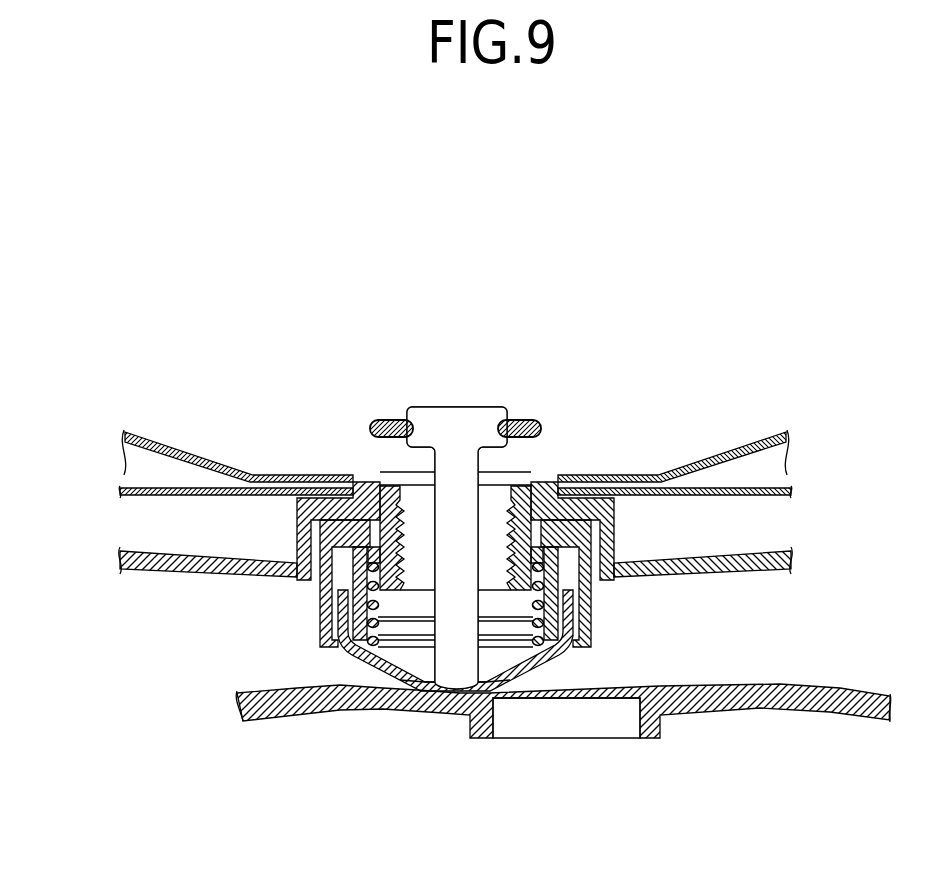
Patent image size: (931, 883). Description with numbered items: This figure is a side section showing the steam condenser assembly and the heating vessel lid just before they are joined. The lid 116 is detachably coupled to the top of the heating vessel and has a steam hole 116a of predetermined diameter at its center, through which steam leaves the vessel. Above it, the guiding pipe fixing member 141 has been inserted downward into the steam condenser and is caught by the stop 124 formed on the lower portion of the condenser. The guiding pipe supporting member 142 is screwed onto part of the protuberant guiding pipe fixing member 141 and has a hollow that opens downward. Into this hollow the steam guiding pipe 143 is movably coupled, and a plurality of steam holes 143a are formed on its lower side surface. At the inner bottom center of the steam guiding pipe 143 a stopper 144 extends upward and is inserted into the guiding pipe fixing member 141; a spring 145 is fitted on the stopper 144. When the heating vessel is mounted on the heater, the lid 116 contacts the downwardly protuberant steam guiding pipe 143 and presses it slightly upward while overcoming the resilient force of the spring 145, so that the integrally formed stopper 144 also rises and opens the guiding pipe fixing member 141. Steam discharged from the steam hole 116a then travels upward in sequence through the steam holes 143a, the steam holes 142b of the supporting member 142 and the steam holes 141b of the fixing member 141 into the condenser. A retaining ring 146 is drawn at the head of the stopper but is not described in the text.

The lid 116 is at (703, 716).
The steam hole 116a is at (630, 724).
The stop 124 is at (383, 482).
The guiding pipe fixing member 141 is at (396, 562).
The steam holes 141b is at (504, 520).
The guiding pipe supporting member 142 is at (324, 605).
The steam holes 142b is at (513, 606).
The steam guiding pipe 143 is at (340, 652).
The steam holes 143a is at (400, 688).
The stopper 144 is at (443, 495).
The spring 145 is at (517, 646).
The retaining ring 146 is at (537, 418).